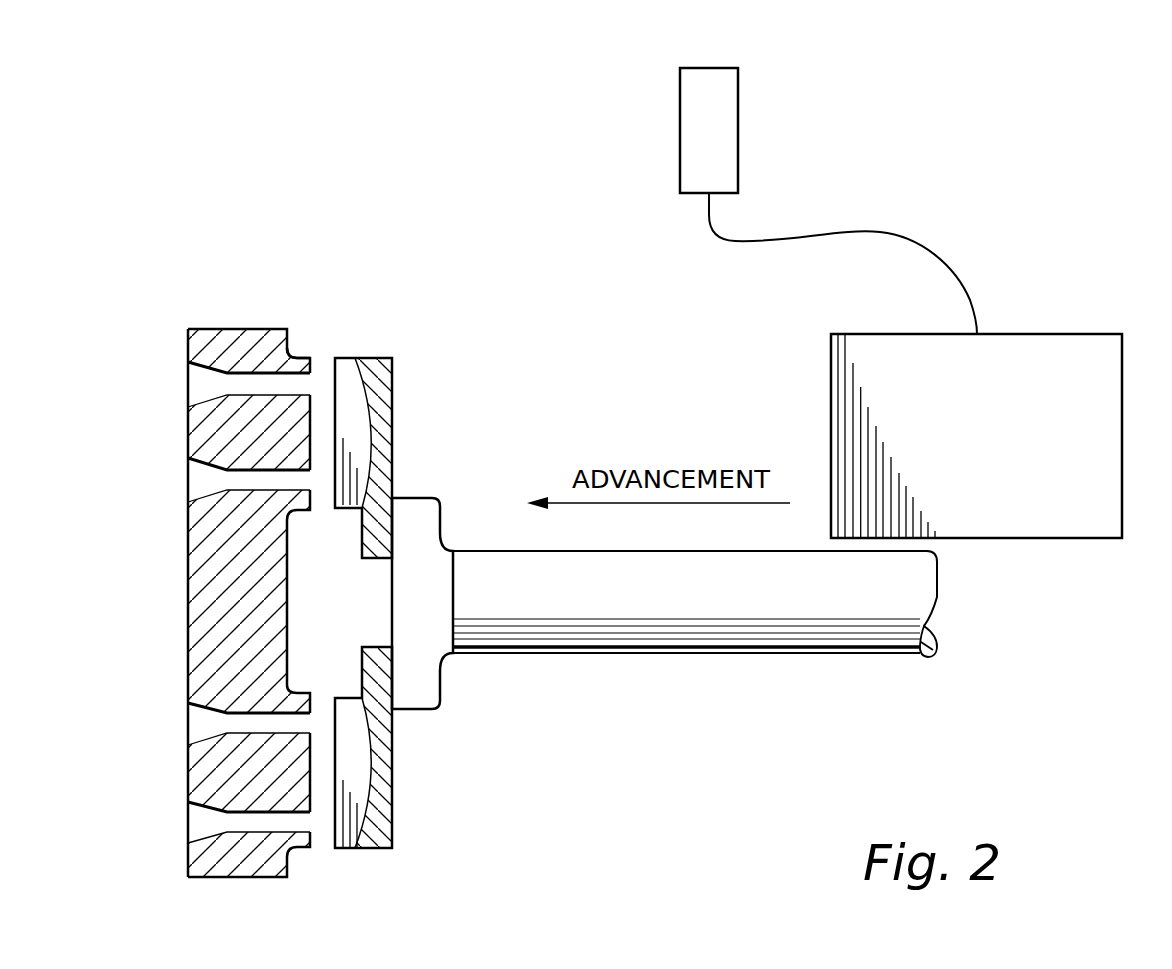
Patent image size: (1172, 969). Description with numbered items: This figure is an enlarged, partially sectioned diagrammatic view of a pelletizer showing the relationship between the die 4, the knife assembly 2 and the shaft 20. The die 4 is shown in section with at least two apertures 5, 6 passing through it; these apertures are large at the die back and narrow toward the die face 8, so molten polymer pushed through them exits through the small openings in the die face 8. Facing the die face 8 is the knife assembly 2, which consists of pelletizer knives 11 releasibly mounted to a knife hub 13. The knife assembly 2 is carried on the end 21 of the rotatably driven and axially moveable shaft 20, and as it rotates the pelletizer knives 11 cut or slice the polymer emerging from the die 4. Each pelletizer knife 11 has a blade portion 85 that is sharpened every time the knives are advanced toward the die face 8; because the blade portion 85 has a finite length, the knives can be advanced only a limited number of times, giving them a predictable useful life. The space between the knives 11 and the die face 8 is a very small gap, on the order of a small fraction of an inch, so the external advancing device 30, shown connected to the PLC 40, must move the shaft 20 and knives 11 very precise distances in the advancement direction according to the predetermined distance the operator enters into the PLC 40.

The knife assembly 2 is at (636, 603).
The die 4 is at (233, 342).
The aperture 5 is at (197, 482).
The aperture 6 is at (197, 820).
The die face 8 is at (312, 360).
The pelletizer knives 11 is at (385, 377).
The knife hub 13 is at (440, 573).
The shaft 20 is at (672, 655).
The end of the shaft 21 is at (455, 606).
The external advancing device 30 is at (1062, 333).
The PLC 40 is at (680, 124).
The blade portion 85 is at (352, 428).